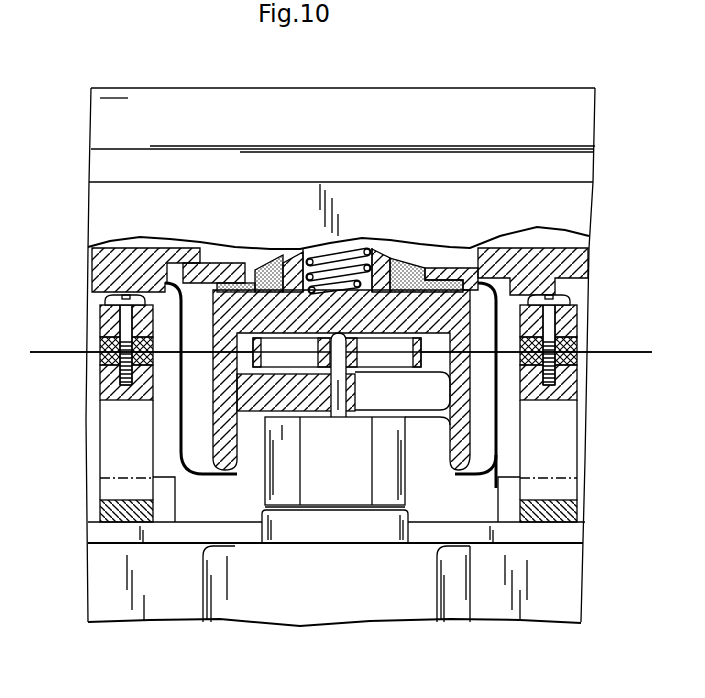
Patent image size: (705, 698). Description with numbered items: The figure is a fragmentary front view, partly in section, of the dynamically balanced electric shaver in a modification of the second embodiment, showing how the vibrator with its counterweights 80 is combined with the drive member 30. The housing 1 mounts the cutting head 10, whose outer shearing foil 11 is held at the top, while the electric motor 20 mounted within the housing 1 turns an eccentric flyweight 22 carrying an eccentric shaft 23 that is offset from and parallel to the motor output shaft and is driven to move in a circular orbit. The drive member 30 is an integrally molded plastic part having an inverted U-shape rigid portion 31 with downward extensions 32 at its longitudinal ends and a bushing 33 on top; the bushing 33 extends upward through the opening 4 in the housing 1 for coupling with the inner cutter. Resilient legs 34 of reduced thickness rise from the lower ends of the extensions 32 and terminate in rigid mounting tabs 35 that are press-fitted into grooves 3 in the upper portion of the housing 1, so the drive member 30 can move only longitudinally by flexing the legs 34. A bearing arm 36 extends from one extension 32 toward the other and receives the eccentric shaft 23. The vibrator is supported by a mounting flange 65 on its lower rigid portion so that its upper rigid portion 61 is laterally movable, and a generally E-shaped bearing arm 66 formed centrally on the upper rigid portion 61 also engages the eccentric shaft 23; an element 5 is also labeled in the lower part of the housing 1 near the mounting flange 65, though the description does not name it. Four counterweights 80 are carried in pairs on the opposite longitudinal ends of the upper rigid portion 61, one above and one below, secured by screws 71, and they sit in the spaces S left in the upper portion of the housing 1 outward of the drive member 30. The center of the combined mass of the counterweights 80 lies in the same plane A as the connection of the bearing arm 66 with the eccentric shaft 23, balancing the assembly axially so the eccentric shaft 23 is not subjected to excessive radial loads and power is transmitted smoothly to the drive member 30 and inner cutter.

The housing 1 is at (578, 533).
The grooves 3 is at (133, 290).
The opening 4 is at (218, 262).
The seal ring 5 is at (100, 503).
The cutting head 10 is at (115, 86).
The outer shearing foil 11 is at (572, 88).
The electric motor 20 is at (375, 602).
The eccentric flyweight 22 is at (405, 490).
The eccentric shaft 23 is at (337, 385).
The drive member 30 is at (476, 483).
The inverted U-shape rigid portion 31 is at (278, 288).
The downward extensions 32 is at (499, 383).
The bushing 33 is at (381, 258).
The resilient legs 34 is at (499, 323).
The mounting tab 35 is at (138, 263).
The bearing arm 36 is at (252, 409).
The upper rigid portion 61 is at (560, 366).
The mounting flange 65 is at (97, 522).
The bearing arm 66 is at (256, 285).
The screws 71 is at (110, 300).
The counterweights 80 is at (67, 382).
The plane A is at (331, 356).
The spaces S is at (165, 410).